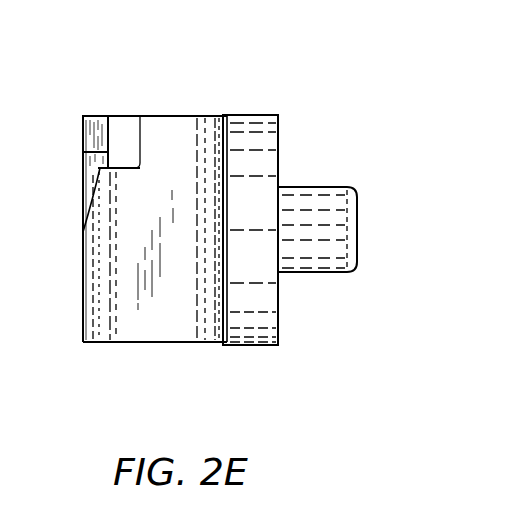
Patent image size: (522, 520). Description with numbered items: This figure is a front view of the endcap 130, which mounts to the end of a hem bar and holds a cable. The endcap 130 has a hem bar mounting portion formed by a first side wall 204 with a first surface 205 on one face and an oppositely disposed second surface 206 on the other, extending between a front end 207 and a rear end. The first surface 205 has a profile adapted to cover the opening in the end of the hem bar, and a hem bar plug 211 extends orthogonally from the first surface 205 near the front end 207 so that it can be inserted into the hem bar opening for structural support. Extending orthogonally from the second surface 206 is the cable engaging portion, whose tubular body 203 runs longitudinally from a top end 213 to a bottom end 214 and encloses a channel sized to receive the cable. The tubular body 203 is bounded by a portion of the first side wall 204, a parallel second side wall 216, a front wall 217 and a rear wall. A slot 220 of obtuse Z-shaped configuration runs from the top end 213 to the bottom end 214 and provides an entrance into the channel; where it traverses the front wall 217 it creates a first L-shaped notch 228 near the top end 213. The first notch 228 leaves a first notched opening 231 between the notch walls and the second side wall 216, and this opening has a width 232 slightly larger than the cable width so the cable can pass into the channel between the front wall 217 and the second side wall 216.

The endcap 130 is at (192, 57).
The tubular body 203 is at (215, 123).
The first side wall 204 is at (250, 118).
The first surface 205 is at (280, 150).
The second surface 206 is at (223, 319).
The front end 207 is at (265, 295).
The hem bar plug 211 is at (358, 218).
The top end 213 is at (92, 115).
The bottom end 214 is at (105, 343).
The second side wall 216 is at (83, 140).
The front wall 217 is at (180, 120).
The slot 220 is at (90, 162).
The first L-shaped notch 228 is at (127, 170).
The first notched opening 231 is at (135, 155).
The width 232 is at (141, 110).